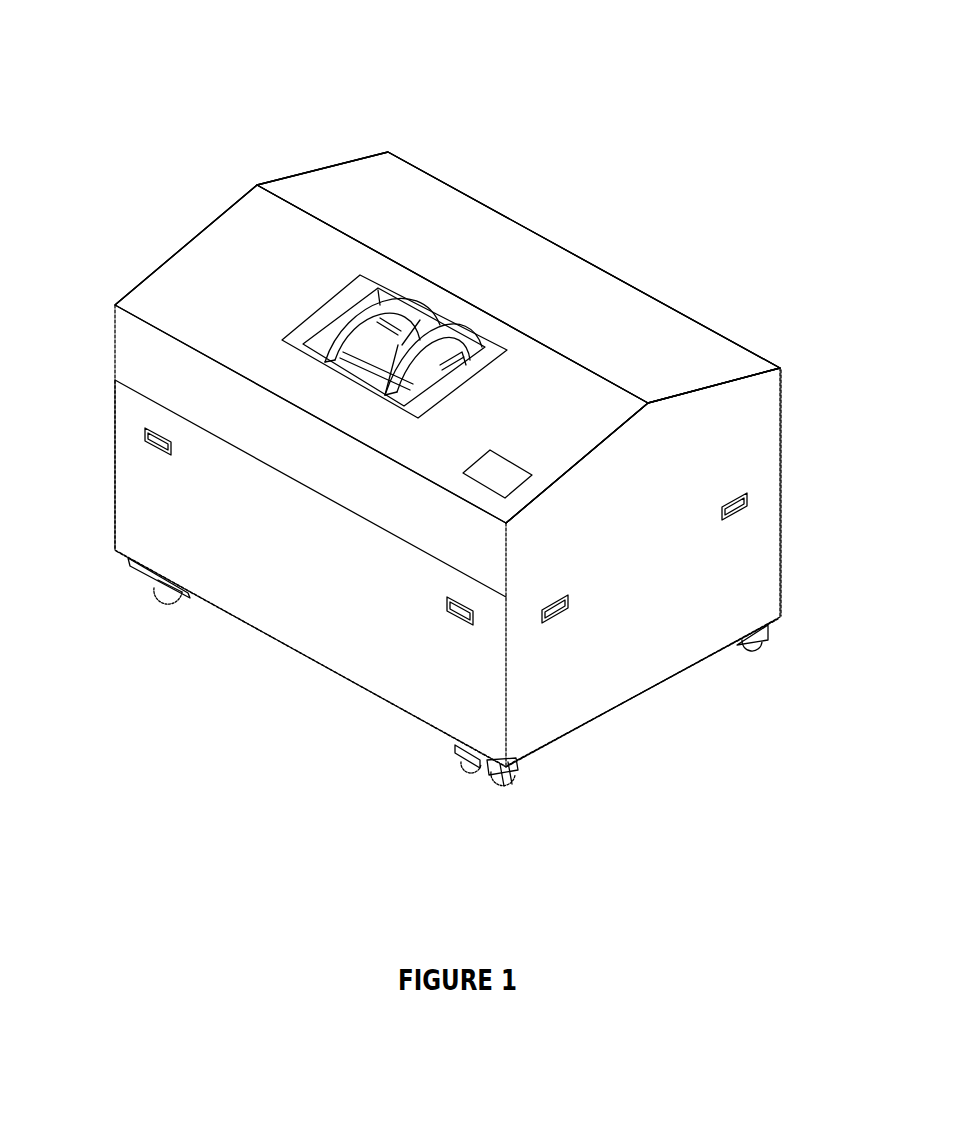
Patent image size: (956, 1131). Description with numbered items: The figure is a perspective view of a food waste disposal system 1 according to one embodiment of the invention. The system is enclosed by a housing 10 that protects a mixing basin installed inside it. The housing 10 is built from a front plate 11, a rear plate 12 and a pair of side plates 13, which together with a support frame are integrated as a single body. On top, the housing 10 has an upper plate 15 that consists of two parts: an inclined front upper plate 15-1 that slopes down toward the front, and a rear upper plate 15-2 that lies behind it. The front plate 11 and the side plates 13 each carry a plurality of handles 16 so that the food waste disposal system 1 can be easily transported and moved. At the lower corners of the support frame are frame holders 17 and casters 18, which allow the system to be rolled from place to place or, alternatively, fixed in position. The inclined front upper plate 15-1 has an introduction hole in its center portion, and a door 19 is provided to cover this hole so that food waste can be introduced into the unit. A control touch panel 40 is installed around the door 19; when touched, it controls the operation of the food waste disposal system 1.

The food waste disposal system 1 is at (180, 122).
The housing 10 is at (176, 246).
The front plate 11 is at (300, 593).
The rear plate 12 is at (782, 447).
The side plate 13 is at (678, 627).
The upper plate 15 is at (668, 140).
The inclined front upper plate 15-1 is at (542, 372).
The rear upper plate 15-2 is at (658, 343).
The handle 16 is at (146, 443).
The frame holder 17 is at (470, 763).
The caster 18 is at (510, 777).
The door 19 is at (367, 280).
The control touch panel 40 is at (510, 480).